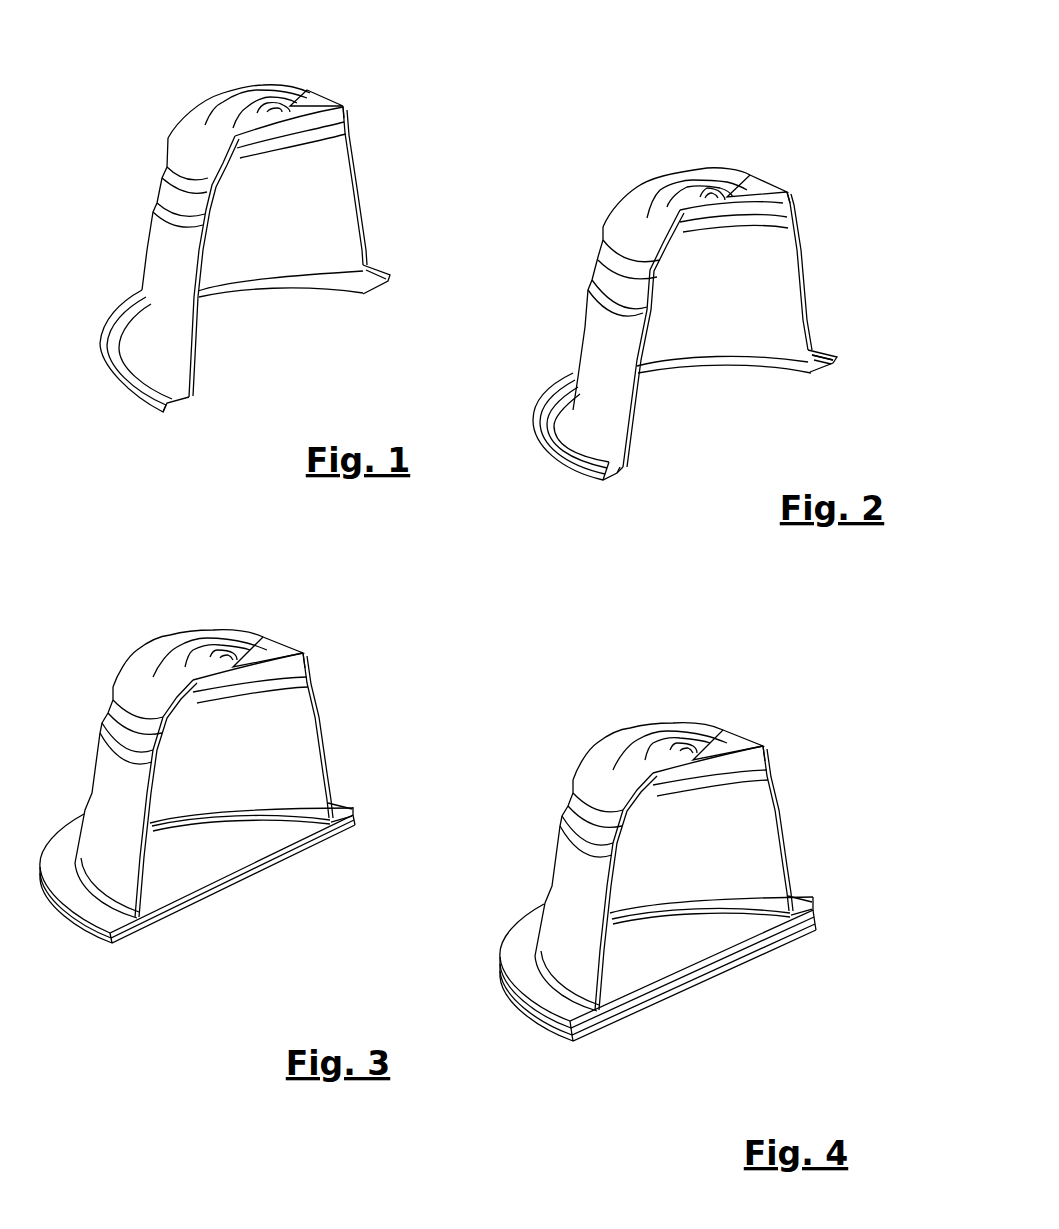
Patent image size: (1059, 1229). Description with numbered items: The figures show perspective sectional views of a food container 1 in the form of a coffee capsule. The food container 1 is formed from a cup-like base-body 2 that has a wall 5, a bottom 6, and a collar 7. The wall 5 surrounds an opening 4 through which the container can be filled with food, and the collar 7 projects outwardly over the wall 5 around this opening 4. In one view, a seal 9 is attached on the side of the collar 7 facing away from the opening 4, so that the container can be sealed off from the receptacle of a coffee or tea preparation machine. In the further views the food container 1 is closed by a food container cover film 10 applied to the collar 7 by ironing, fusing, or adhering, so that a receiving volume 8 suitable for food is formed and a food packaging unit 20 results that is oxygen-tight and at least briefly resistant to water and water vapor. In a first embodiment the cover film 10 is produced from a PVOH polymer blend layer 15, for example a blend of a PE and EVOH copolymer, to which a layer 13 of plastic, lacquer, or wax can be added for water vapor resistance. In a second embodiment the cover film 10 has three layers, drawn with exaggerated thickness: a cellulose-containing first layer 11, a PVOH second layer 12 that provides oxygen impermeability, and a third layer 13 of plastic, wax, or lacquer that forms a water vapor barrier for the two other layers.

In FIG. 1, the food container 1 is at (231, 218).
In FIG. 2, the food container 1 is at (683, 312).
In FIG. 3, the food container 1 is at (221, 742).
In FIG. 4, the food container 1 is at (677, 834).
In FIG. 1, the base-body 2 is at (353, 182).
In FIG. 2, the base-body 2 is at (802, 253).
In FIG. 3, the base-body 2 is at (313, 723).
In FIG. 4, the base-body 2 is at (772, 813).
In FIG. 1, the opening 4 is at (270, 337).
In FIG. 2, the opening 4 is at (715, 410).
In FIG. 3, the opening 4 is at (241, 843).
In FIG. 4, the opening 4 is at (701, 934).
In FIG. 1, the wall 5 is at (249, 236).
In FIG. 2, the wall 5 is at (709, 319).
In FIG. 3, the wall 5 is at (206, 786).
In FIG. 4, the wall 5 is at (662, 878).
In FIG. 1, the bottom 6 is at (197, 155).
In FIG. 2, the bottom 6 is at (625, 227).
In FIG. 3, the bottom 6 is at (143, 680).
In FIG. 4, the bottom 6 is at (602, 772).
In FIG. 1, the collar 7 is at (137, 373).
In FIG. 2, the collar 7 is at (552, 458).
In FIG. 3, the collar 7 is at (343, 827).
In FIG. 4, the collar 7 is at (800, 912).
In FIG. 3, the receiving volume 8 is at (275, 757).
In FIG. 4, the receiving volume 8 is at (733, 848).
In FIG. 2, the seal 9 is at (613, 470).
In FIG. 3, the food container cover film 10 is at (197, 946).
In FIG. 4, the food container cover film 10 is at (651, 1036).
In FIG. 4, the first layer 11 is at (568, 1032).
In FIG. 4, the second layer 12 is at (573, 1037).
In FIG. 3, the third layer 13 is at (117, 937).
In FIG. 4, the third layer 13 is at (582, 1033).
In FIG. 3, the PVOH polymer blend layer 15 is at (110, 942).
In FIG. 3, the food packaging unit 20 is at (221, 815).
In FIG. 4, the food packaging unit 20 is at (674, 906).